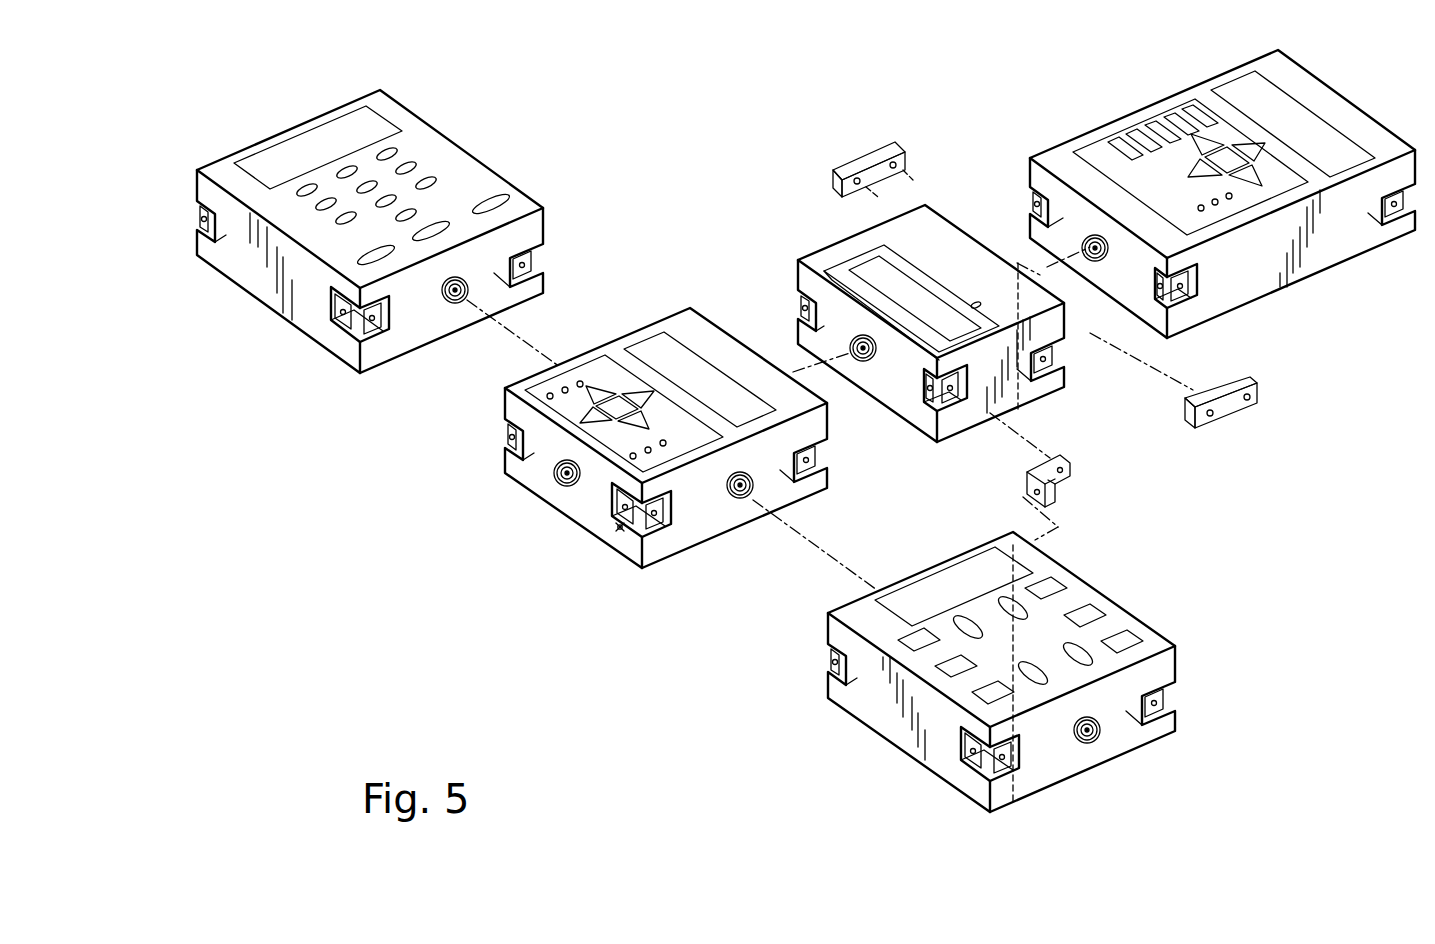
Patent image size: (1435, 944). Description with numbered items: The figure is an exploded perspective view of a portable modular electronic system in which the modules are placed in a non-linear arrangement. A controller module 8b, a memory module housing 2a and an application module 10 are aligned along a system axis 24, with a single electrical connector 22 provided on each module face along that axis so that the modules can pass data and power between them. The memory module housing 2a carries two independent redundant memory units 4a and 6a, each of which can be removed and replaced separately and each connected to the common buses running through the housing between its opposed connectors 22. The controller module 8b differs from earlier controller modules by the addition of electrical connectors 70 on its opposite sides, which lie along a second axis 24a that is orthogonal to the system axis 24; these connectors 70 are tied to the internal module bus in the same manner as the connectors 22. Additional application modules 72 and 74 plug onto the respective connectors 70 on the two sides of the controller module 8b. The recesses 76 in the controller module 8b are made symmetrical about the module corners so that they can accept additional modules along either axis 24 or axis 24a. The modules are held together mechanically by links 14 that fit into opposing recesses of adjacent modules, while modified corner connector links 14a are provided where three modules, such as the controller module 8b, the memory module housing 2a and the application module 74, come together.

The application module 72 is at (337, 231).
The electrical connector 70 is at (453, 303).
The controller module 8b is at (629, 438).
The electrical connector 22 is at (567, 487).
The recess 76 is at (620, 530).
The memory unit 4a is at (837, 268).
The memory unit 6a is at (870, 253).
The axis 24 is at (806, 374).
The memory module housing 2a is at (956, 323).
The link 14 is at (870, 158).
The corner connector link 14a is at (1068, 473).
The application module 10 is at (1222, 194).
The application module 74 is at (969, 672).
The axis 24a is at (846, 569).